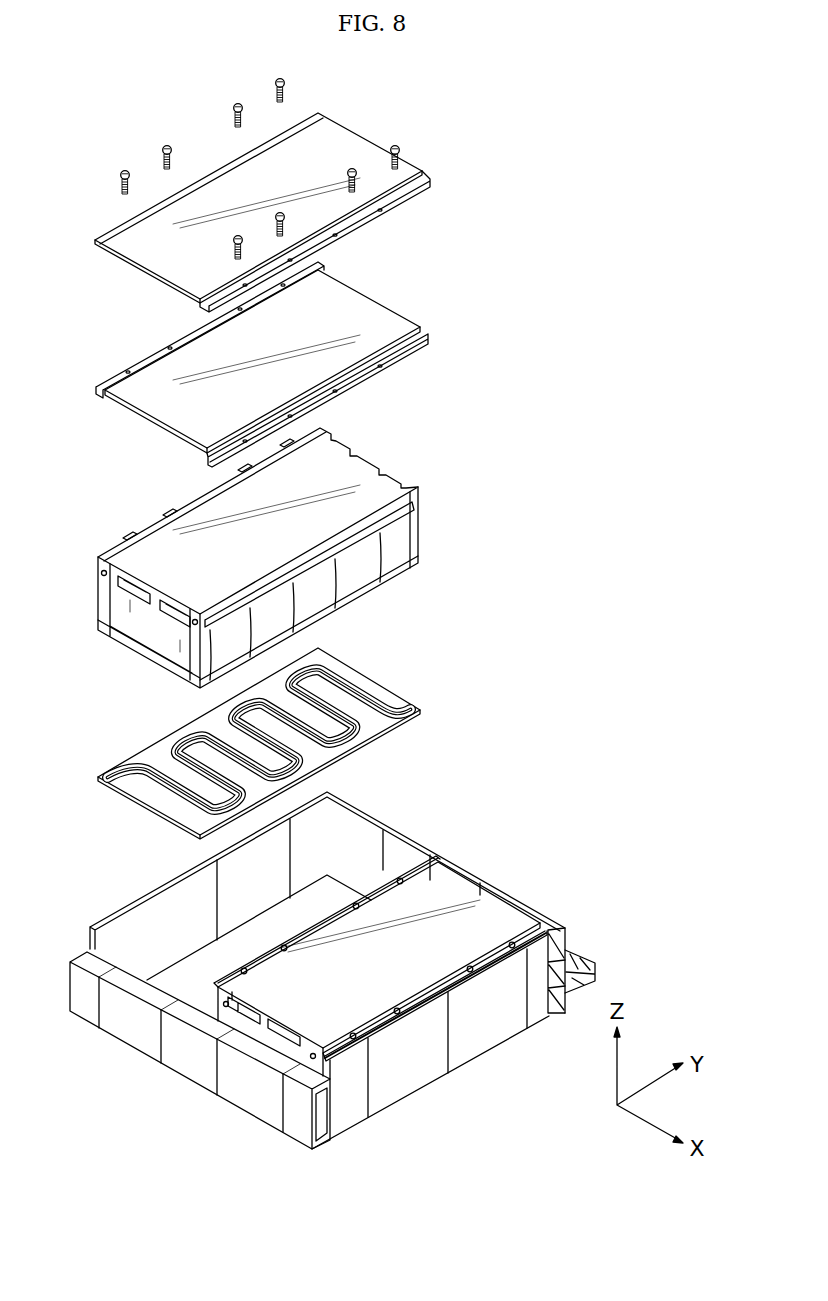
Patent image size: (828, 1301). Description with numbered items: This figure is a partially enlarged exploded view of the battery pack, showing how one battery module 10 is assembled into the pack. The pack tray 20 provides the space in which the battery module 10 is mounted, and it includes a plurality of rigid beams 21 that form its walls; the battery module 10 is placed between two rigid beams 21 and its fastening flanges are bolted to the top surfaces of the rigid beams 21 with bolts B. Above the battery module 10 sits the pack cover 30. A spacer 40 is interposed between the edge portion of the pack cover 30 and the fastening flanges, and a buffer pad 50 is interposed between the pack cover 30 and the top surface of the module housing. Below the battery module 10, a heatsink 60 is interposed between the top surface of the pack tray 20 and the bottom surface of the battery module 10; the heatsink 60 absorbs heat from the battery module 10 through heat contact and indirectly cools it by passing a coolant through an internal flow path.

The bolts B is at (275, 96).
The pack cover 30 is at (357, 142).
The spacer 40 is at (307, 273).
The buffer pad 50 is at (367, 308).
The battery module 10 is at (400, 455).
The heatsink 60 is at (387, 695).
The pack tray 20 is at (316, 970).
The rigid beam 21 is at (100, 919).